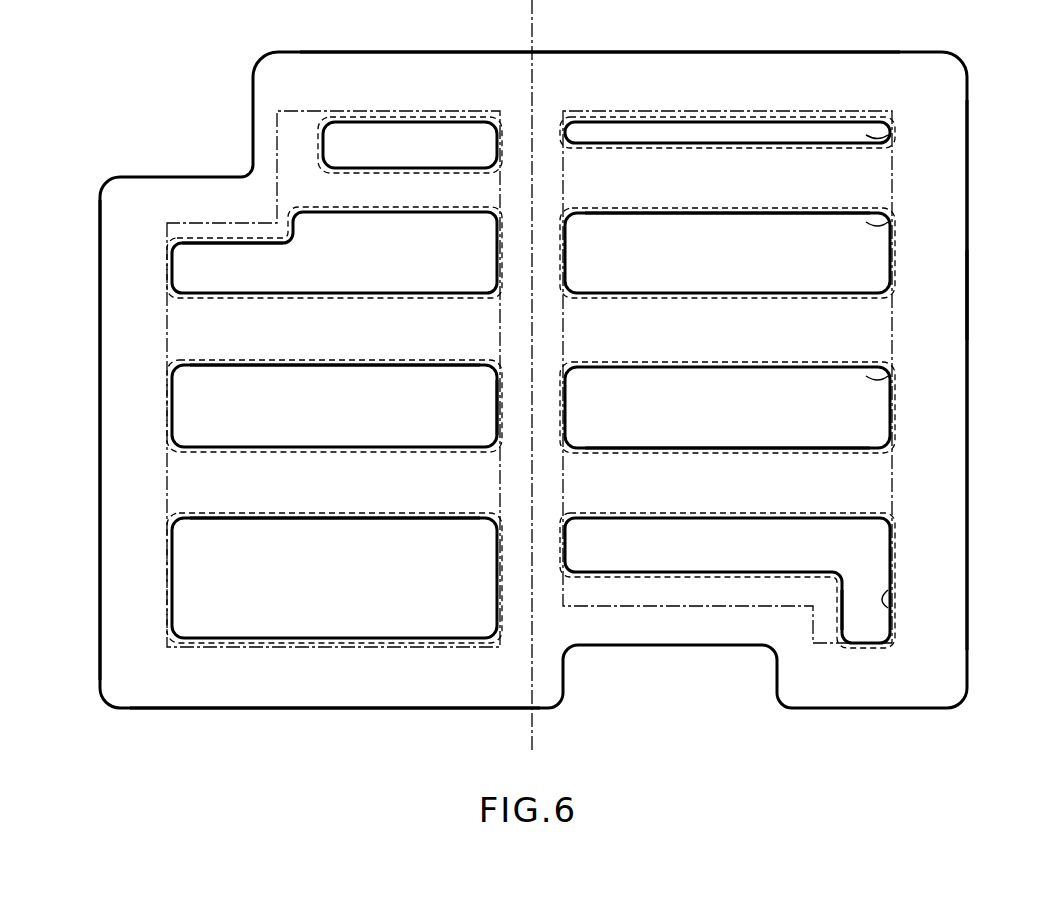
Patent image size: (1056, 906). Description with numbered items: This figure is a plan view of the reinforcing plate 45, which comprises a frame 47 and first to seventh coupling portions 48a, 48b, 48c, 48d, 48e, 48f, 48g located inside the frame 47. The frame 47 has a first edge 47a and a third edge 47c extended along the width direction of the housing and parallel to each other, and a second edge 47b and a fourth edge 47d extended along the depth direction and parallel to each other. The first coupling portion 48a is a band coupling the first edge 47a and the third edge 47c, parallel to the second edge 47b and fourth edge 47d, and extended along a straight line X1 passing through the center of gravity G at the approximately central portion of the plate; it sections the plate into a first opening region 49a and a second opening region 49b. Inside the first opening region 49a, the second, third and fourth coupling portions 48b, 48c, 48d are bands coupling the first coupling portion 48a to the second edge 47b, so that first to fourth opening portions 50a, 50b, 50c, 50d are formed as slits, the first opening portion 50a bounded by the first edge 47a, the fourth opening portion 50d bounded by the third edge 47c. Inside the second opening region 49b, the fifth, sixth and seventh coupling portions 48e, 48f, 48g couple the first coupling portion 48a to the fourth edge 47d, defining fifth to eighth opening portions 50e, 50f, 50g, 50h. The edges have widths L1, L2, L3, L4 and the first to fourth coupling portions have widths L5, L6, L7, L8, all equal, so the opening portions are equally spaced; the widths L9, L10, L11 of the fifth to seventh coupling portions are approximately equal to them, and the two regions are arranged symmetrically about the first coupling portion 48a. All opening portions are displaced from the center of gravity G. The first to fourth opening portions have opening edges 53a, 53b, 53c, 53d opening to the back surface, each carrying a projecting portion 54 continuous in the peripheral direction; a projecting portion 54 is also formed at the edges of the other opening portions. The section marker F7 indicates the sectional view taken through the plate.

The reinforcing plate 45 is at (968, 295).
The frame 47 is at (968, 470).
The first edge 47a is at (592, 75).
The second edge 47b is at (945, 388).
The third edge 47c is at (450, 708).
The fourth edge 47d is at (118, 430).
The first coupling portion 48a is at (506, 414).
The second coupling portion 48b is at (752, 214).
The third coupling portion 48c is at (752, 368).
The fourth coupling portion 48d is at (752, 519).
The fifth coupling portion 48e is at (440, 213).
The sixth coupling portion 48f is at (333, 366).
The seventh coupling portion 48g is at (333, 519).
The first opening region 49a is at (892, 180).
The second opening region 49b is at (167, 348).
The first opening portion 50a is at (765, 133).
The second opening portion 50b is at (665, 230).
The third opening portion 50c is at (635, 442).
The fourth opening portion 50d is at (875, 557).
The fifth opening portion 50e is at (430, 140).
The sixth opening portion 50f is at (215, 258).
The seventh opening portion 50g is at (238, 377).
The eighth opening portion 50h is at (222, 545).
The opening edge 53a is at (890, 132).
The opening edge 53b is at (890, 228).
The opening edge 53c is at (890, 378).
The opening edge 53d is at (892, 605).
The projecting portion 54 is at (350, 113).
The center of gravity G is at (535, 335).
The straight line X1 is at (535, 640).
The section line for FIG. 7 F7 is at (682, 68).
The width L1 is at (647, 53).
The width L2 is at (893, 407).
The width L3 is at (377, 648).
The width L4 is at (101, 560).
The width L5 is at (498, 250).
The width L6 is at (797, 144).
The width L7 is at (797, 294).
The width L8 is at (797, 449).
The width L9 is at (377, 169).
The width L10 is at (377, 294).
The width L11 is at (377, 448).